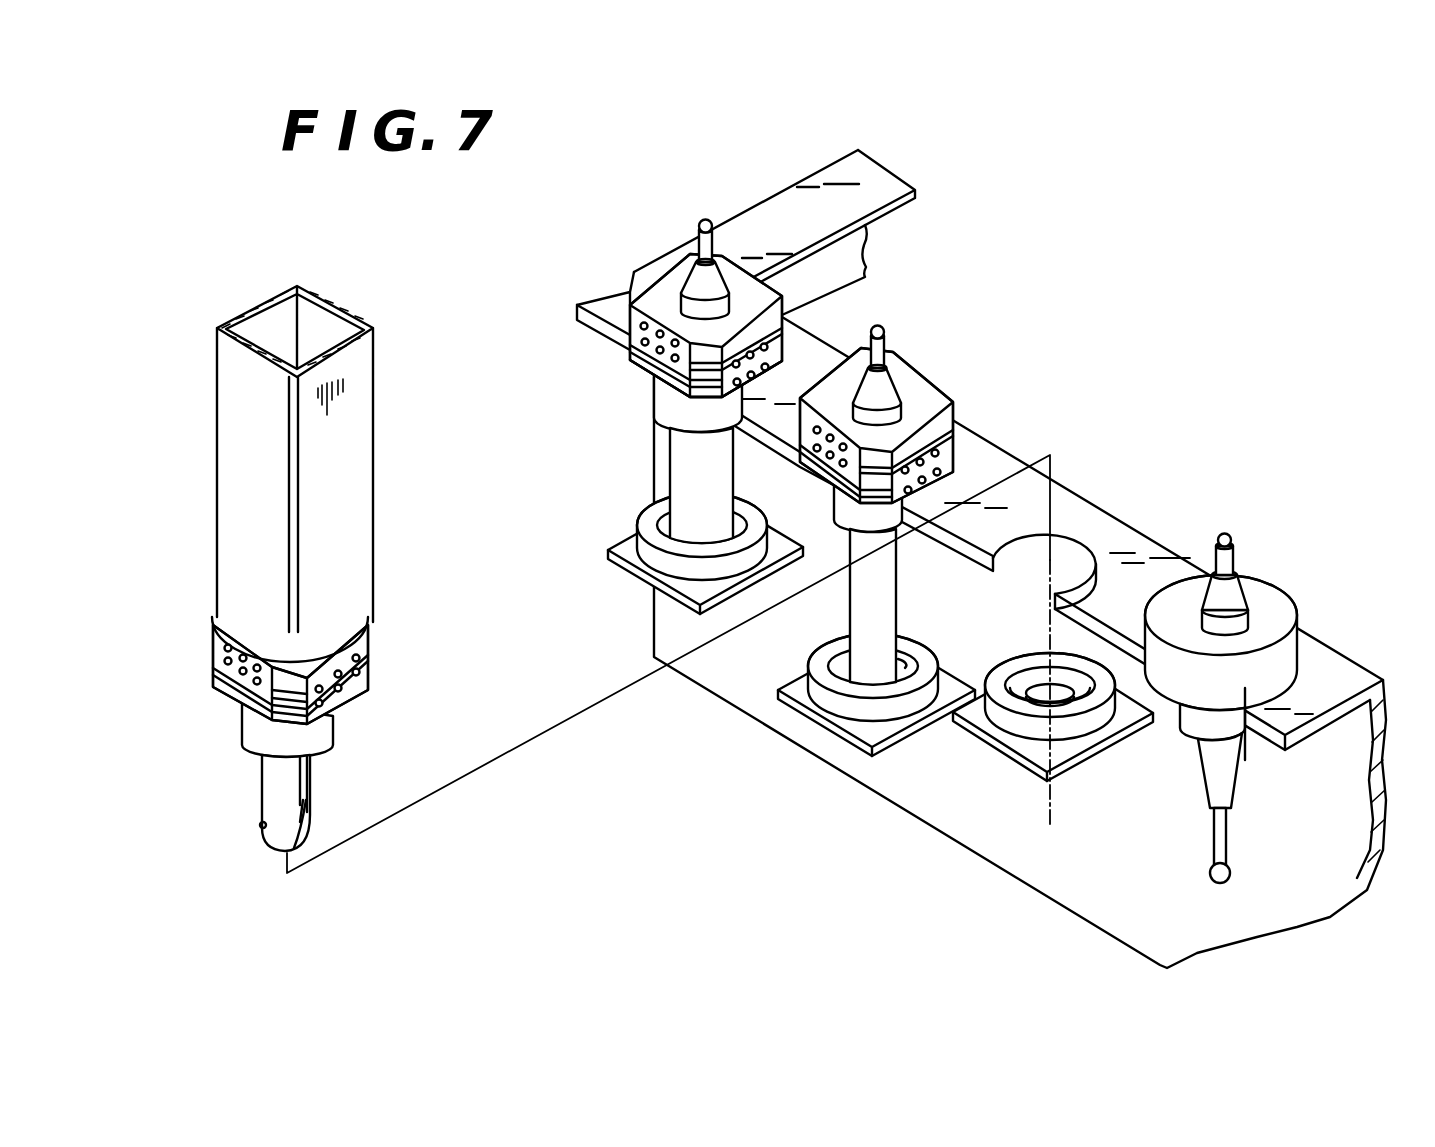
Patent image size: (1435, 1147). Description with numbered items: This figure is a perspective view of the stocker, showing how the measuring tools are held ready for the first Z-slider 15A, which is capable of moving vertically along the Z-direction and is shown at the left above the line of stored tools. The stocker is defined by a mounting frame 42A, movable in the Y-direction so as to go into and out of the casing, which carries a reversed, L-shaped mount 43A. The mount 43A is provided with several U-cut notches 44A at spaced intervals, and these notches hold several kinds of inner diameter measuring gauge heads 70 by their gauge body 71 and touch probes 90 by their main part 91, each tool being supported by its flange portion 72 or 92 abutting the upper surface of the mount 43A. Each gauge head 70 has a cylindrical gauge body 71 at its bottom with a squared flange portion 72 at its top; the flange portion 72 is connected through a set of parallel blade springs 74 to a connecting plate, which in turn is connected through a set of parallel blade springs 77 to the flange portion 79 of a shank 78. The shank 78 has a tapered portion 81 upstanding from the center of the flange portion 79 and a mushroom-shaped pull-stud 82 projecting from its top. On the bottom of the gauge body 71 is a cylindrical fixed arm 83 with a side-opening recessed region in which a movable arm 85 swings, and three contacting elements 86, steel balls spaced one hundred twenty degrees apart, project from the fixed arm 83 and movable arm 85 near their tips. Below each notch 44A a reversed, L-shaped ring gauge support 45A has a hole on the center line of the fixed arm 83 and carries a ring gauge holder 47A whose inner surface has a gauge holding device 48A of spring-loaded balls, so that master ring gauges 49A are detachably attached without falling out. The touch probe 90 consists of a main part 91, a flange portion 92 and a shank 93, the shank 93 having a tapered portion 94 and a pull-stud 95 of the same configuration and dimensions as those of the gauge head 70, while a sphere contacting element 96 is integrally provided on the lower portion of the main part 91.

The first Z-slider 15A is at (366, 433).
The inner diameter measuring gauge head 70 is at (688, 262).
The gauge body 71 is at (668, 403).
The squared flange portion 72 is at (632, 350).
The blade springs 74 is at (785, 362).
The parallel blade springs 77 is at (595, 313).
The shank 78 is at (692, 258).
The flange portion 79 is at (628, 298).
The tapered portion 81 is at (683, 283).
The pull-stud 82 is at (707, 220).
The fixed arm 83 is at (683, 443).
The movable arm 85 is at (298, 848).
The contacting elements 86 is at (260, 825).
The mounting frame 42A is at (812, 172).
The mount 43A is at (993, 458).
The U-cut notches 44A is at (1073, 543).
The ring gauge support 45A is at (640, 576).
The ring gauge holder 47A is at (645, 540).
The gauge holding device 48A is at (905, 656).
The master ring gauges 49A is at (647, 518).
The touch probe 90 is at (1290, 584).
The main part 91 is at (1227, 782).
The flange portion 92 is at (1273, 617).
The shank 93 is at (1240, 570).
The tapered portion 94 is at (1258, 578).
The pull-stud 95 is at (1220, 535).
The sphere contacting element 96 is at (1232, 876).